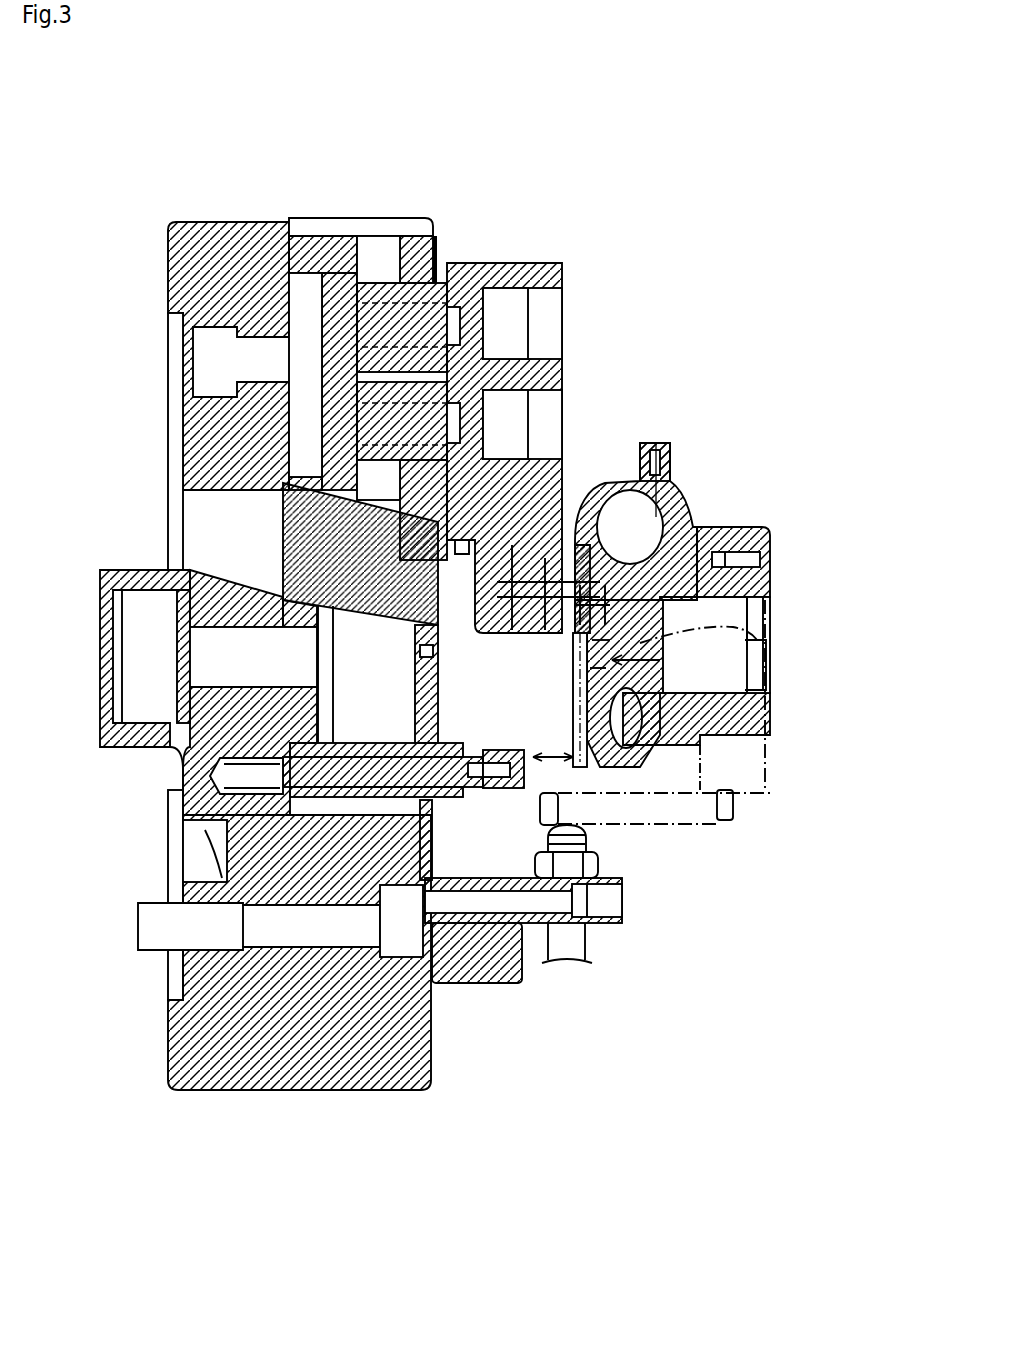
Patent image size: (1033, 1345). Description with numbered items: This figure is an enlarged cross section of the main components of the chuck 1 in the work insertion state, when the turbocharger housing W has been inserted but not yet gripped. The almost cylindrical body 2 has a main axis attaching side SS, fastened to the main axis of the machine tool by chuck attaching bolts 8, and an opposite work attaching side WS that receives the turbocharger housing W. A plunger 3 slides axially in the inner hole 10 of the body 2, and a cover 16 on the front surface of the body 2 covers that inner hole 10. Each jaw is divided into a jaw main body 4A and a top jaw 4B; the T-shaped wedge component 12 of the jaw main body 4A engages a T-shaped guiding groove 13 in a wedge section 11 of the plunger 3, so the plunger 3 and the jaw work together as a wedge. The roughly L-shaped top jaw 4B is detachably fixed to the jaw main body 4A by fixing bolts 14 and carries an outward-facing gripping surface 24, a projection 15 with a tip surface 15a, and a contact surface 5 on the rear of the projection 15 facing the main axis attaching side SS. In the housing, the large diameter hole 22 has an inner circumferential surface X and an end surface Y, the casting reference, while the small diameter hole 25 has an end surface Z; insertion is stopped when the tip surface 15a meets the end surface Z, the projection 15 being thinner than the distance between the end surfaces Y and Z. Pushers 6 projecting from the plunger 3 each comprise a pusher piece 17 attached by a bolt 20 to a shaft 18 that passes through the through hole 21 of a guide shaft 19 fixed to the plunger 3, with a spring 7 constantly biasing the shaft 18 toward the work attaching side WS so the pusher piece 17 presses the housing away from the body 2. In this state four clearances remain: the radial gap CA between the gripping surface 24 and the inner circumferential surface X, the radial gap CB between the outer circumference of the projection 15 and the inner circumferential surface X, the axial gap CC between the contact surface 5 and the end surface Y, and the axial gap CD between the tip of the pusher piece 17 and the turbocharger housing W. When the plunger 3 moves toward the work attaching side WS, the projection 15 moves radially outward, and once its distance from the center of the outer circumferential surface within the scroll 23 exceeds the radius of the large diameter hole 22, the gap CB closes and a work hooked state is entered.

The chuck 1 is at (612, 225).
The body 2 is at (232, 220).
The plunger 3 is at (223, 705).
The jaw main body 4A is at (340, 240).
The top jaw 4B is at (522, 263).
The contact surface 5 is at (577, 545).
The pusher 6 is at (567, 1100).
The spring 7 is at (225, 775).
The chuck attaching bolt 8 is at (290, 940).
The inner hole 10 is at (367, 660).
The wedge section 11 is at (220, 580).
The wedge component 12 is at (325, 535).
The guiding groove 13 is at (305, 590).
The fixing bolt 14 is at (505, 317).
The projection 15 is at (622, 577).
The tip surface 15a is at (707, 527).
The cover 16 is at (440, 705).
The pusher piece 17 is at (513, 927).
The shaft 18 is at (452, 800).
The guide shaft 19 is at (497, 800).
The bolt 20 is at (472, 752).
The through hole 21 is at (443, 755).
The large diameter hole 22 is at (600, 650).
The scroll 23 is at (660, 441).
The gripping surface 24 is at (700, 605).
The small diameter hole 25 is at (757, 640).
The turbocharger housing W is at (735, 523).
The inner circumferential surface X is at (612, 687).
The end surface Y is at (740, 650).
The end surface Z is at (597, 668).
The gap CA is at (543, 585).
The gap CB is at (547, 594).
The gap CC is at (587, 605).
The gap CD is at (553, 738).
The main axis attaching side SS is at (136, 1156).
The work attaching side WS is at (757, 1142).